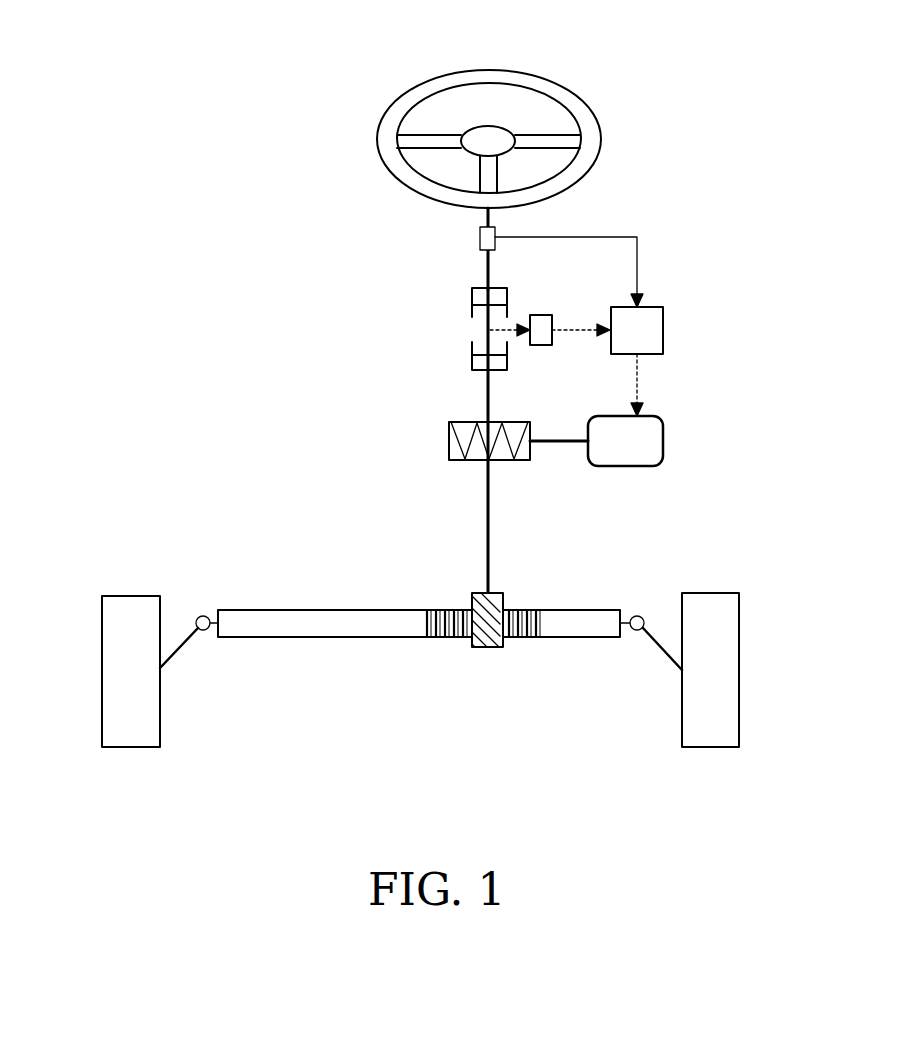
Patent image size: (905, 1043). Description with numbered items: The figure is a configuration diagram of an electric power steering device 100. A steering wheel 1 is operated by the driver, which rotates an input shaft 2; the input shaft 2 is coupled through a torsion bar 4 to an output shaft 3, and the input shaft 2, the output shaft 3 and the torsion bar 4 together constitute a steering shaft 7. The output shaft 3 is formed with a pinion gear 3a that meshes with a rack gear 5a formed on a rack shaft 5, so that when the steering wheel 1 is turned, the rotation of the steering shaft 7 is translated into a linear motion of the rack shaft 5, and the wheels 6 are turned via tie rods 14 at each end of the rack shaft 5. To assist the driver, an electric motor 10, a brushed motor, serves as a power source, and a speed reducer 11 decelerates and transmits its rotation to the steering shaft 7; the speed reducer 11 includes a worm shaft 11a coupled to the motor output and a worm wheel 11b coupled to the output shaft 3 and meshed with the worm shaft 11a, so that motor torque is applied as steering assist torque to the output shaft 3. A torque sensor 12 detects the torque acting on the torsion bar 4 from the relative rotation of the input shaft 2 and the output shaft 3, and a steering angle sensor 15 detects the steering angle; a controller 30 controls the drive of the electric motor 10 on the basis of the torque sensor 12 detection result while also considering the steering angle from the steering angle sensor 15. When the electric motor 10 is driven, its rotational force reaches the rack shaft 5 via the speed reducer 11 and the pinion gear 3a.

The steering wheel 1 is at (574, 106).
The input shaft 2 is at (487, 279).
The output shaft 3 is at (487, 395).
The pinion gear 3a is at (486, 648).
The torsion bar 4 is at (489, 328).
The rack shaft 5 is at (424, 633).
The rack gear 5a is at (441, 638).
The wheels 6 is at (102, 711).
The steering shaft 7 is at (451, 400).
The electric motor 10 is at (631, 457).
The speed reducer 11 is at (471, 469).
The worm shaft 11a is at (563, 446).
The worm wheel 11b is at (456, 457).
The torque sensor 12 is at (537, 326).
The tie rods 14 is at (185, 652).
The steering angle sensor 15 is at (490, 237).
The controller 30 is at (655, 321).
The electric power steering device 100 is at (683, 234).